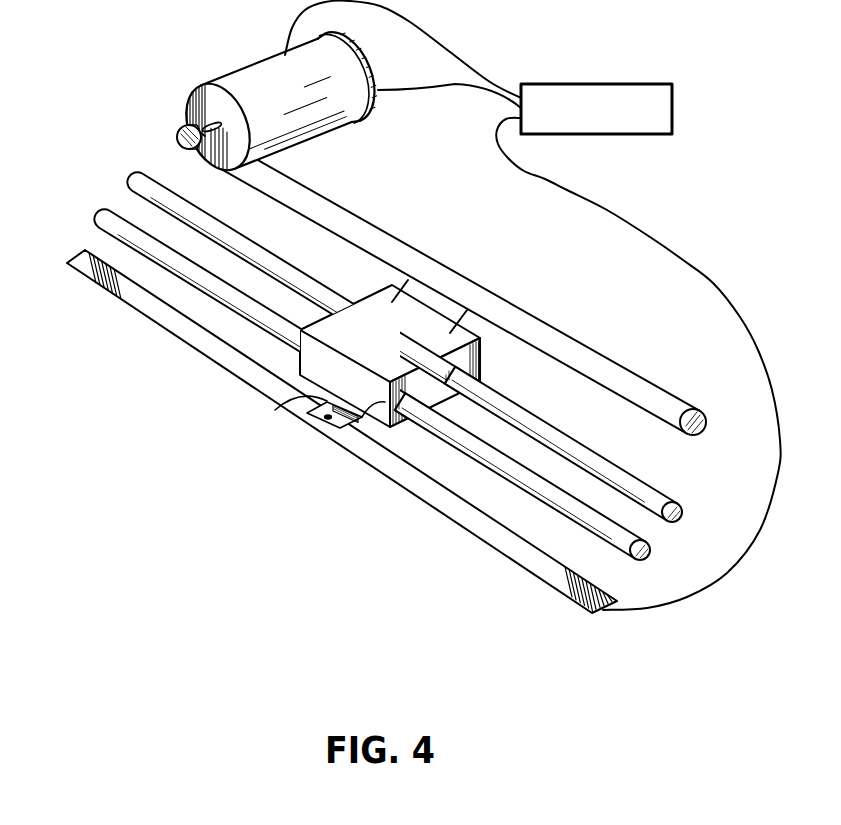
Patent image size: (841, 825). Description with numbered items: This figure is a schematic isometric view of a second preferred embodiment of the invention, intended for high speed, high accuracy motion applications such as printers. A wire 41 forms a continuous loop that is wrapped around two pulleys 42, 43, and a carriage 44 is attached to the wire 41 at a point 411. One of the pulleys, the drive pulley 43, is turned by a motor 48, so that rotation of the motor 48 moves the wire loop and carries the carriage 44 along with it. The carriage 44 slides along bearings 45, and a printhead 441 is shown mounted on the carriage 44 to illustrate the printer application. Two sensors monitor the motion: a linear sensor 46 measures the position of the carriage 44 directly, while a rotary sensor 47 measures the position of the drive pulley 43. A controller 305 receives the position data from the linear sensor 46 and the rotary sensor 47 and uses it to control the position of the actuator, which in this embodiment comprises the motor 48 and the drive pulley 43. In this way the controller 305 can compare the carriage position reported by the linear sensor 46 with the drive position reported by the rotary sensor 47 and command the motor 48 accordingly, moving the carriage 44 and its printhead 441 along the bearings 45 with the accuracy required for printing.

The wire 41 is at (525, 340).
The attachment point 411 is at (430, 287).
The pulley 42 is at (708, 412).
The drive pulley 43 is at (178, 133).
The carriage 44 is at (367, 418).
The printhead 441 is at (293, 413).
The bearings 45 is at (645, 550).
The linear sensor 46 is at (417, 497).
The rotary sensor 47 is at (406, 62).
The motor 48 is at (264, 62).
The controller 305 is at (648, 134).